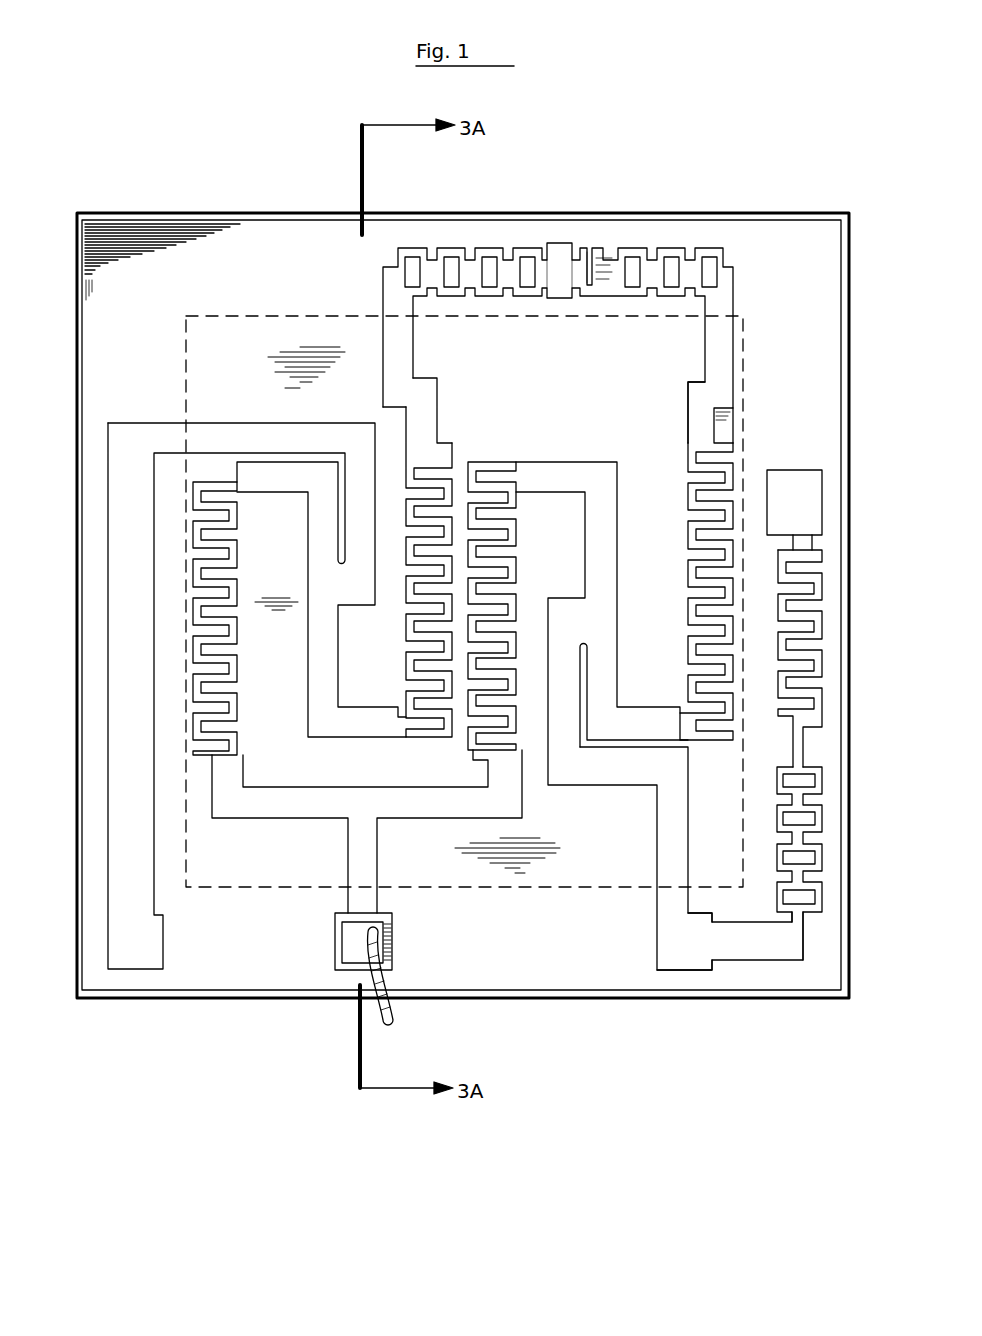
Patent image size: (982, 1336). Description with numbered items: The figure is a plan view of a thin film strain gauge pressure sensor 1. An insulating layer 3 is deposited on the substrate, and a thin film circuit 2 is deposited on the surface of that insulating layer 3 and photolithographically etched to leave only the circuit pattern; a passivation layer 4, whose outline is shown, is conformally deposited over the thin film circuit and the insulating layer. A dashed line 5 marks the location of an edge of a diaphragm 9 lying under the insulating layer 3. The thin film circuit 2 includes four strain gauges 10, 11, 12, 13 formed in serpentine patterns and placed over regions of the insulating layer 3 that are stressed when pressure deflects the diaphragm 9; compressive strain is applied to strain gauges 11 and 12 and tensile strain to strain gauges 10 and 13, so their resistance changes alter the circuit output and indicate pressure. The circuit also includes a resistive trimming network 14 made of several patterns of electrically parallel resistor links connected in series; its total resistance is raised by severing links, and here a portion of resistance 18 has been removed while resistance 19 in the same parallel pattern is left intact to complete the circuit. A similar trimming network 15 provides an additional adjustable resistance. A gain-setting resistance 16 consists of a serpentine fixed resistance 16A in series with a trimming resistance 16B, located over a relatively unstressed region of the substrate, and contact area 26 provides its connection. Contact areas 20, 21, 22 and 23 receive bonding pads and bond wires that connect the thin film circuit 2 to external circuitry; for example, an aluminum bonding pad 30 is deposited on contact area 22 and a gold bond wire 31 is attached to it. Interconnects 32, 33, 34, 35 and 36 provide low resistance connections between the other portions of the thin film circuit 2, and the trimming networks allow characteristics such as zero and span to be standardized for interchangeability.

The thin film strain gauge pressure sensor 1 is at (200, 1022).
The thin film circuit 2 is at (722, 436).
The insulating layer 3 is at (643, 1003).
The passivation layer 4 is at (586, 990).
The dashed line 5 is at (247, 314).
The diaphragm 9 is at (222, 338).
The strain gauge 10 is at (688, 518).
The strain gauge 11 is at (486, 462).
The strain gauge 12 is at (406, 666).
The strain gauge 13 is at (240, 668).
The resistive trimming network 14 is at (558, 307).
The trimming network 15 is at (492, 247).
The gain-setting resistance 16 is at (844, 755).
The serpentine fixed resistance 16A is at (822, 607).
The trimming resistance 16B is at (822, 822).
The resistance 18 is at (590, 250).
The resistance 19 is at (597, 293).
The contact area 20 is at (557, 243).
The contact area 21 is at (150, 940).
The contact area 22 is at (391, 942).
The contact area 23 is at (712, 963).
The contact area 26 is at (822, 496).
The bonding pad 30 is at (350, 943).
The gold bond wire 31 is at (385, 980).
The interconnect 32 is at (728, 352).
The interconnect 33 is at (610, 565).
The interconnect 34 is at (437, 392).
The interconnect 35 is at (278, 493).
The interconnect 36 is at (272, 810).